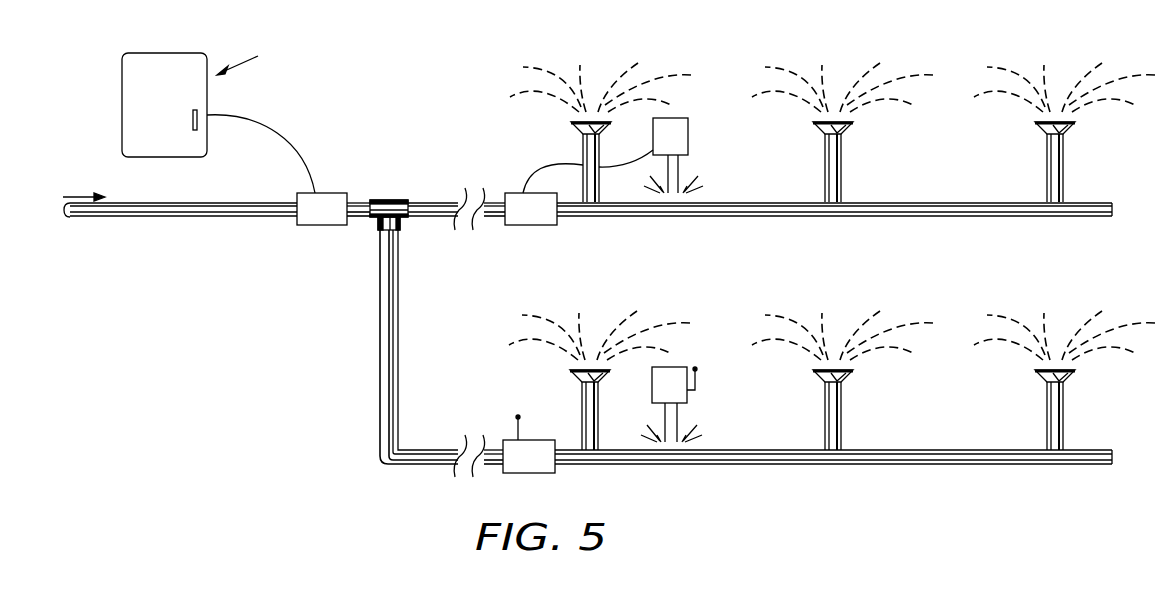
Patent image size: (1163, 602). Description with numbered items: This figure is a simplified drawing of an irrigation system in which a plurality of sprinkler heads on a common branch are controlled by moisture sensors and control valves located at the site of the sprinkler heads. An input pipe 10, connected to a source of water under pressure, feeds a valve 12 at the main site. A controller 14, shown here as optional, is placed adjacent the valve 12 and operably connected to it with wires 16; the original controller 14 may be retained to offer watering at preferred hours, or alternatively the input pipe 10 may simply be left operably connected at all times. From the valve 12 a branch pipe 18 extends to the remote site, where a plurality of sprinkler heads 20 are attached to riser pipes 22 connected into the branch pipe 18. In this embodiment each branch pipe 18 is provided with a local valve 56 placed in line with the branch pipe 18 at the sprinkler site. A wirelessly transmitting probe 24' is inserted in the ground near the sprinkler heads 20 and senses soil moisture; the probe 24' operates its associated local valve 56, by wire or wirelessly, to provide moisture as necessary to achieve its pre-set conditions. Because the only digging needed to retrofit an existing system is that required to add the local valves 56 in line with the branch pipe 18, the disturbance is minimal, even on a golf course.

The input pipe 10 is at (222, 203).
The valve 12 is at (337, 193).
The controller 14 is at (122, 93).
The wires 16 is at (288, 132).
The branch pipe 18 is at (933, 202).
The sprinkler head 20 is at (582, 153).
The riser pipe 22 is at (598, 173).
The wirelessly transmitting probe 24' is at (670, 277).
The local valve 56 is at (557, 220).